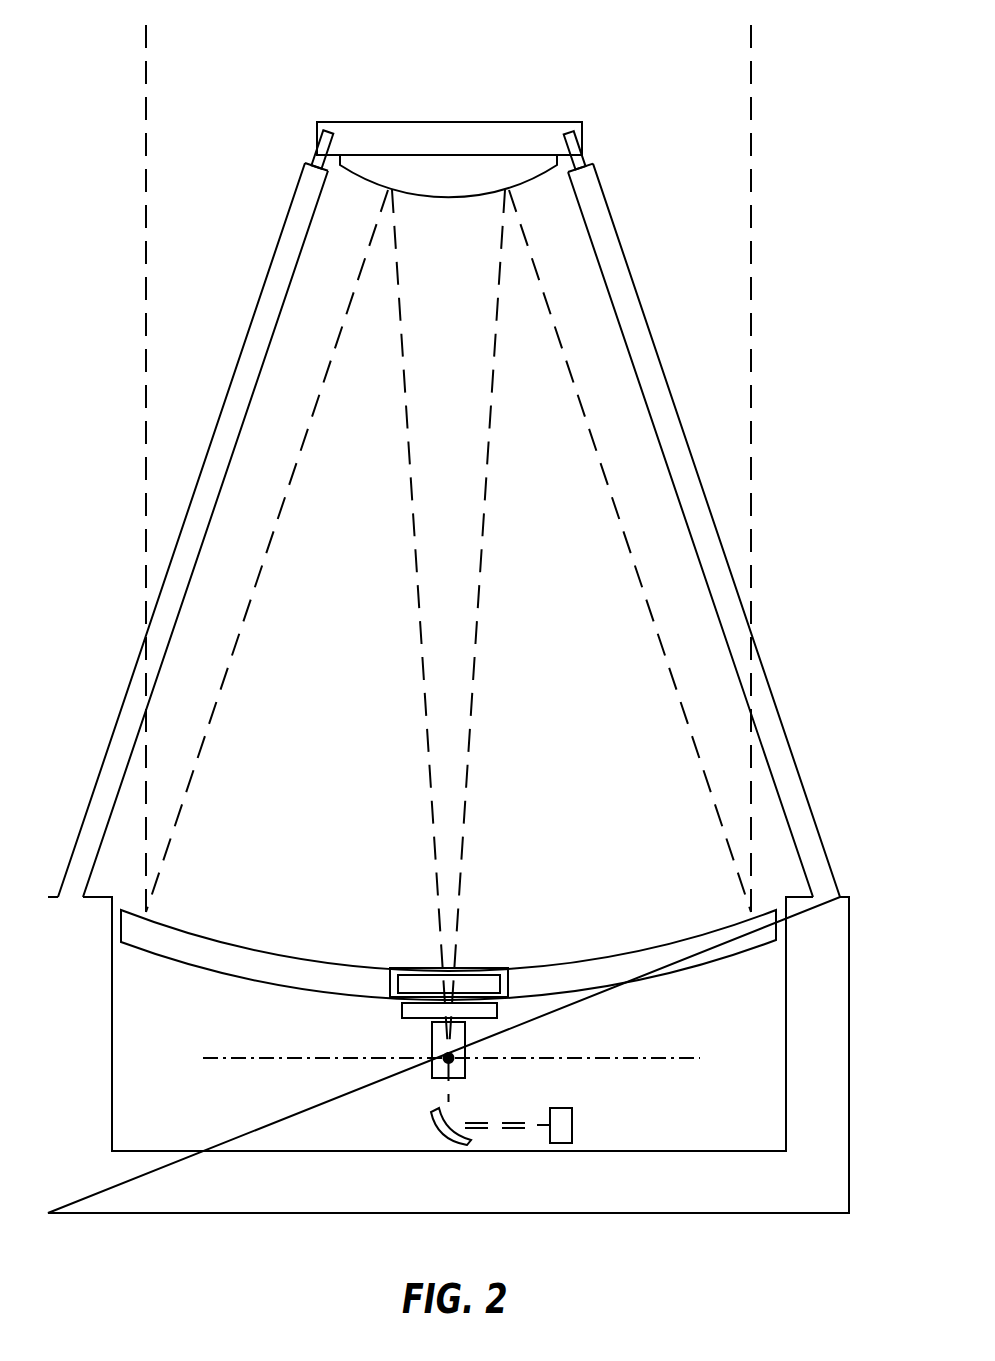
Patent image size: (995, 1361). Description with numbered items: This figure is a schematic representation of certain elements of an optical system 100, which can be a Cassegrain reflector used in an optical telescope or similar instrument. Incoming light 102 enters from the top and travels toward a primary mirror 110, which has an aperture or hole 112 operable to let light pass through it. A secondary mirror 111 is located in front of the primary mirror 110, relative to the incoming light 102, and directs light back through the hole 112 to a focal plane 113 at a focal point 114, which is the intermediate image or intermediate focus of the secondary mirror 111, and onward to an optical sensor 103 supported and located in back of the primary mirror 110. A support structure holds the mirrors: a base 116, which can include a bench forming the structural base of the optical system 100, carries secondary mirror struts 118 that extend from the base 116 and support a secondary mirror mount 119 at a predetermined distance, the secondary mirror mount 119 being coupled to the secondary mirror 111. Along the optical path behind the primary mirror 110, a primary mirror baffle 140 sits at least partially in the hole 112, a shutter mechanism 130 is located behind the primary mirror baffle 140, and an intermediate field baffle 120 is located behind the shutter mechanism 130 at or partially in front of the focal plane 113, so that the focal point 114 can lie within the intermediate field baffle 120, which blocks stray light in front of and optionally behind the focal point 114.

The optical system 100 is at (270, 42).
The incoming light 102 is at (146, 153).
The optical sensor 103 is at (575, 1125).
The primary mirror 110 is at (303, 958).
The secondary mirror 111 is at (448, 199).
The hole 112 is at (473, 967).
The focal plane 113 is at (590, 1057).
The focal point 114 is at (454, 1055).
The base 116 is at (175, 1150).
The secondary mirror struts 118 is at (259, 300).
The secondary mirror mount 119 is at (441, 120).
The intermediate field baffle 120 is at (432, 1040).
The shutter mechanism 130 is at (402, 1010).
The primary mirror baffle 140 is at (415, 968).